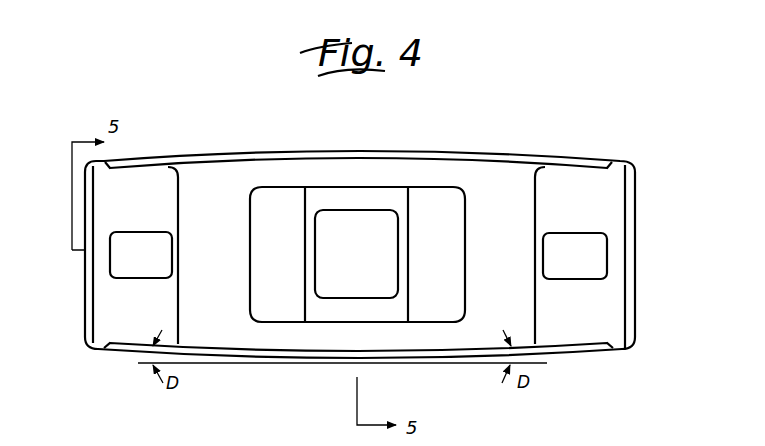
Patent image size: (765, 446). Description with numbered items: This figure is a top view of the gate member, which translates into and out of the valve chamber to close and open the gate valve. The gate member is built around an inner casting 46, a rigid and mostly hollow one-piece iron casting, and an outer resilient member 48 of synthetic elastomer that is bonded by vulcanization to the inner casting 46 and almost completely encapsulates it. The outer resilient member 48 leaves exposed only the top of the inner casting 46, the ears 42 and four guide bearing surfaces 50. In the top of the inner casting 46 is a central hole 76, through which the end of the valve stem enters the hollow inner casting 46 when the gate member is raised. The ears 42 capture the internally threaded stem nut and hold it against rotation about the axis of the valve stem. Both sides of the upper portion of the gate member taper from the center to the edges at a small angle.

The ears 42 is at (435, 303).
The inner casting 46 is at (482, 168).
The outer resilient member 48 is at (530, 161).
The guide bearing surfaces 50 is at (108, 161).
The central hole 76 is at (350, 215).